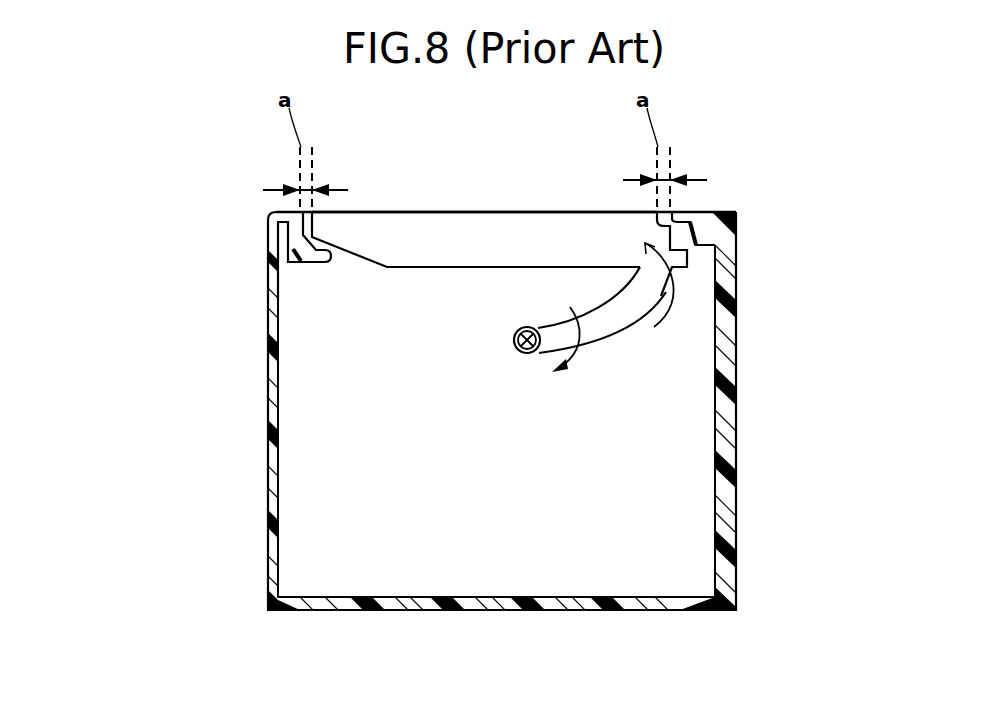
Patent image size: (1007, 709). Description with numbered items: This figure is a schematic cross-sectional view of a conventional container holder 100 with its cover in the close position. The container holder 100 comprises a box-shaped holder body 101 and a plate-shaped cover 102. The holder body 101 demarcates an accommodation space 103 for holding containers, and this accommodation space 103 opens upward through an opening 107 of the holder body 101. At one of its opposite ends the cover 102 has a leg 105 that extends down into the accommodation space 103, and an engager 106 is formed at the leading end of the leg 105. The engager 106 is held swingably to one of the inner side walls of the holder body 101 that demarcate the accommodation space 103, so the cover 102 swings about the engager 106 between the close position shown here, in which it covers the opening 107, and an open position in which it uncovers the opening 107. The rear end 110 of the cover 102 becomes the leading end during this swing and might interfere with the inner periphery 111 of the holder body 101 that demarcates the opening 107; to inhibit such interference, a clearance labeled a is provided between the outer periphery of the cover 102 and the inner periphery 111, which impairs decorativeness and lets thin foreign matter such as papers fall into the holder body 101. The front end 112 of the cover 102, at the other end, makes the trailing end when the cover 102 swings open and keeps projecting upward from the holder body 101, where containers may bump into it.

The conventional container holder 100 is at (175, 203).
The holder body 101 is at (727, 412).
The cover 102 is at (445, 226).
The accommodation space 103 is at (656, 516).
The leg 105 is at (654, 327).
The engager 106 is at (519, 330).
The opening 107 is at (418, 194).
The rear end 110 is at (647, 267).
The inner periphery 111 is at (674, 212).
The front end 112 is at (295, 211).